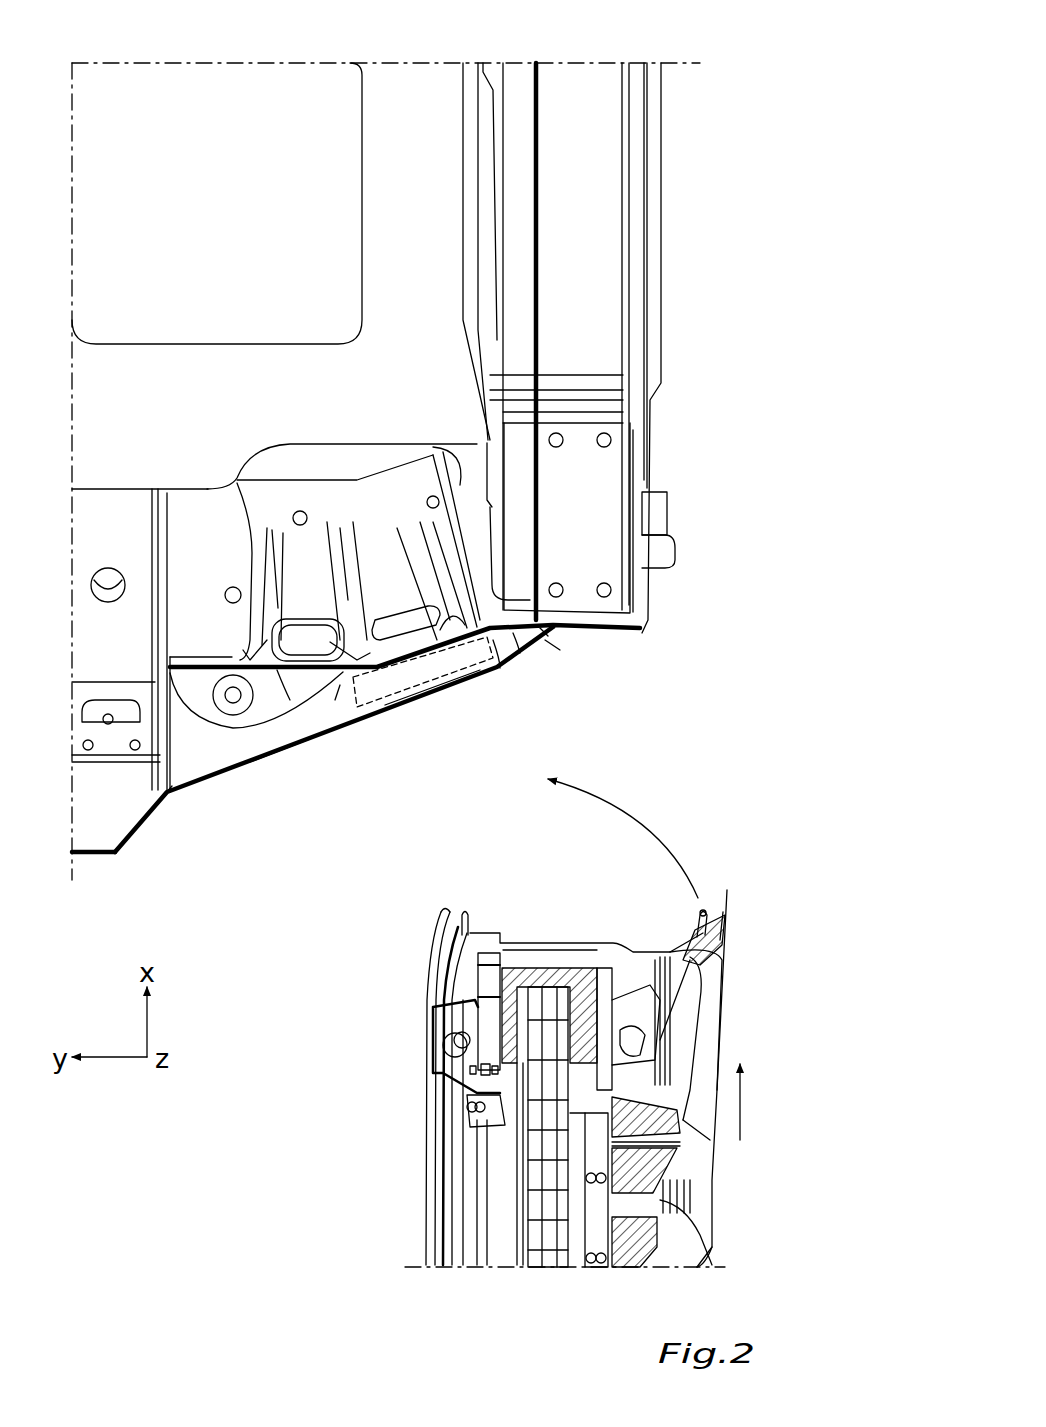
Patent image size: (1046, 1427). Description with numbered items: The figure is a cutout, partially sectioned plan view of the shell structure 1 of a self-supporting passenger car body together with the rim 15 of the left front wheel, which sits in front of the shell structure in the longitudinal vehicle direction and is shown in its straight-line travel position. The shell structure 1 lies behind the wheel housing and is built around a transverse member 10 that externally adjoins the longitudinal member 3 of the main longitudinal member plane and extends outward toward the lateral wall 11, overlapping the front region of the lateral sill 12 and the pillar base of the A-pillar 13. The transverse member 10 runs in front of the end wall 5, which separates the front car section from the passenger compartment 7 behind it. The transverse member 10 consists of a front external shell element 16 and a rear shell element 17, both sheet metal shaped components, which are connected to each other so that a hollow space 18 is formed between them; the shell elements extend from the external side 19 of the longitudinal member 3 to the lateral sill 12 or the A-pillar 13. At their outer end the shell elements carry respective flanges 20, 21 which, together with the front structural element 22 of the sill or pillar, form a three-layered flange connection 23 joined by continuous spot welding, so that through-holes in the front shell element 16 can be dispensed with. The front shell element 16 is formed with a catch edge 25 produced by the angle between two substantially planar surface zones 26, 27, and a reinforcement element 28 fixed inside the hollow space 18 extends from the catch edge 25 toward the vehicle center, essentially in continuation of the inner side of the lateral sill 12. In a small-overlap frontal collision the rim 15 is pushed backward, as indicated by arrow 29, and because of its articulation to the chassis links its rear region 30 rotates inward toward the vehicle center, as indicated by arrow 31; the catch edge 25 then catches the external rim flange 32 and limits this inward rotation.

The shell structure 1 is at (225, 815).
The longitudinal member 3 is at (128, 800).
The end wall 5 is at (196, 575).
The passenger compartment 7 is at (186, 135).
The transverse member 10 is at (237, 733).
The lateral wall 11 is at (682, 135).
The lateral sill 12 is at (678, 262).
The A-pillar 13 is at (653, 480).
The rim 15 is at (418, 1160).
The front external shell element 16 is at (277, 753).
The rear shell element 17 is at (283, 672).
The hollow space 18 is at (340, 700).
The external side 19 is at (167, 795).
The flange 20 is at (536, 605).
The flange 21 is at (583, 610).
The structural element 22 is at (515, 645).
The flange connection 23 is at (557, 648).
The catch edge 25 is at (493, 672).
The planar surface zone 26 is at (392, 703).
The planar surface zone 27 is at (543, 632).
The reinforcement element 28 is at (430, 672).
The arrow 29 is at (745, 1130).
The rear region 30 is at (727, 940).
The arrow 31 is at (640, 812).
The external rim flange 32 is at (724, 905).